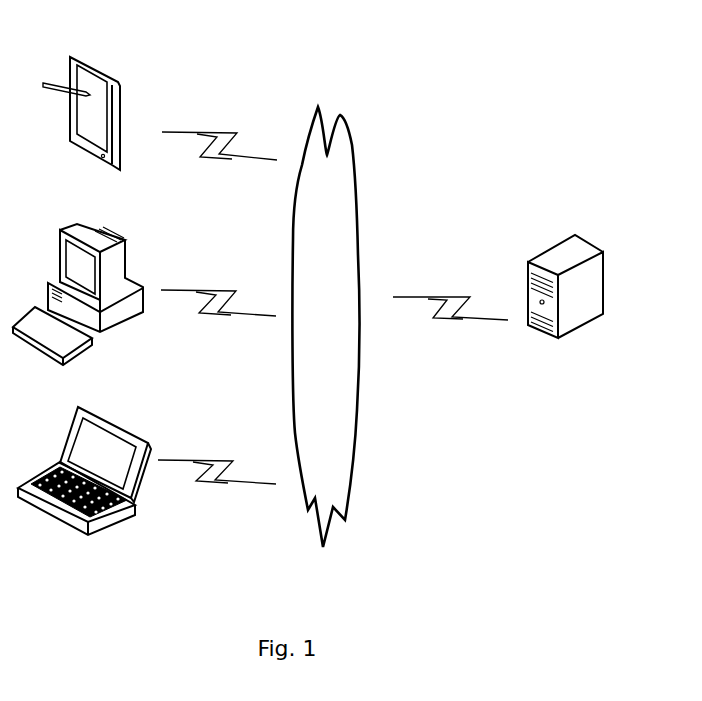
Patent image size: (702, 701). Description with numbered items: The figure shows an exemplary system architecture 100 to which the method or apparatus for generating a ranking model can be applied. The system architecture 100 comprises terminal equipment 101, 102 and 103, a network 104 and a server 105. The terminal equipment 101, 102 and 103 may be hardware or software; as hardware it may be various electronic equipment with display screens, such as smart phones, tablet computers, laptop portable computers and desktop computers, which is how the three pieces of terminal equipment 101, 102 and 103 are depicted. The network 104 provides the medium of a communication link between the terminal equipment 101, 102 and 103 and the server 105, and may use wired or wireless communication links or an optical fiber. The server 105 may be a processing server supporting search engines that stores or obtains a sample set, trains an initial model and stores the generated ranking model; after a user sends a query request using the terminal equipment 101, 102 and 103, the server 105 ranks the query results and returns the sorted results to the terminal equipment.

The system architecture 100 is at (527, 31).
The terminal equipment 101 is at (84, 486).
The terminal equipment 102 is at (78, 306).
The terminal equipment 103 is at (81, 128).
The network 104 is at (325, 327).
The server 105 is at (565, 304).